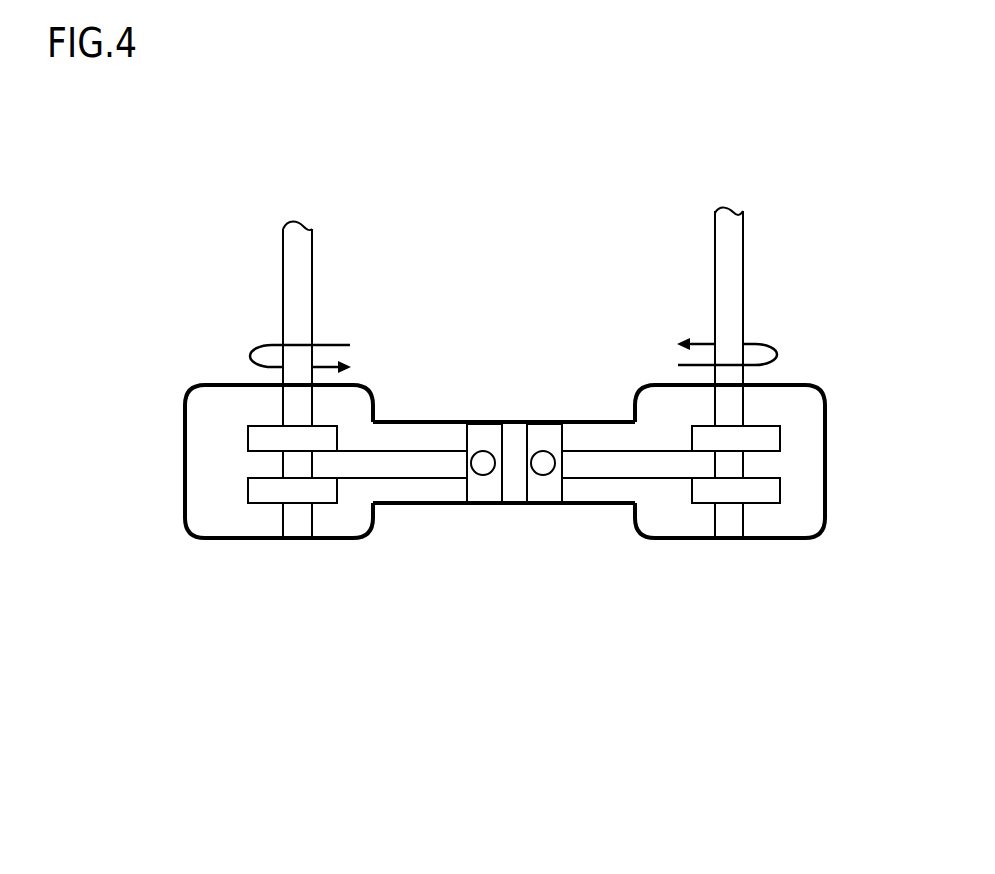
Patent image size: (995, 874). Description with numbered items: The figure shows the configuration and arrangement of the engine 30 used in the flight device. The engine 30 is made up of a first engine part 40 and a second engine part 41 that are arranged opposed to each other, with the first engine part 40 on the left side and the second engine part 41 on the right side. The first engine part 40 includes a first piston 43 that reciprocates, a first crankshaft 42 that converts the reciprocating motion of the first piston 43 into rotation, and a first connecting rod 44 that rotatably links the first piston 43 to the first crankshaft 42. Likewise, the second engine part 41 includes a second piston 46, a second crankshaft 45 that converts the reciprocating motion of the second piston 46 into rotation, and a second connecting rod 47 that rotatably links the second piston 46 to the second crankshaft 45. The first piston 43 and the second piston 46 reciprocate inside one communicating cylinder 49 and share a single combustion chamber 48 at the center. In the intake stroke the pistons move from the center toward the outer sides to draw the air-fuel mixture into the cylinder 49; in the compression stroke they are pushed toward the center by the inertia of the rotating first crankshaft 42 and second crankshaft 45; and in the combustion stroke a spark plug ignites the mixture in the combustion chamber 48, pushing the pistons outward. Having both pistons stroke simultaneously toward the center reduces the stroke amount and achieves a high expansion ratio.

The engine 30 is at (475, 167).
The first engine part 40 is at (487, 667).
The second engine part 41 is at (813, 667).
The first crankshaft 42 is at (283, 328).
The first piston 43 is at (463, 438).
The first connecting rod 44 is at (388, 463).
The second crankshaft 45 is at (745, 308).
The second piston 46 is at (555, 438).
The second connecting rod 47 is at (603, 460).
The combustion chamber 48 is at (513, 492).
The cylinder 49 is at (523, 493).